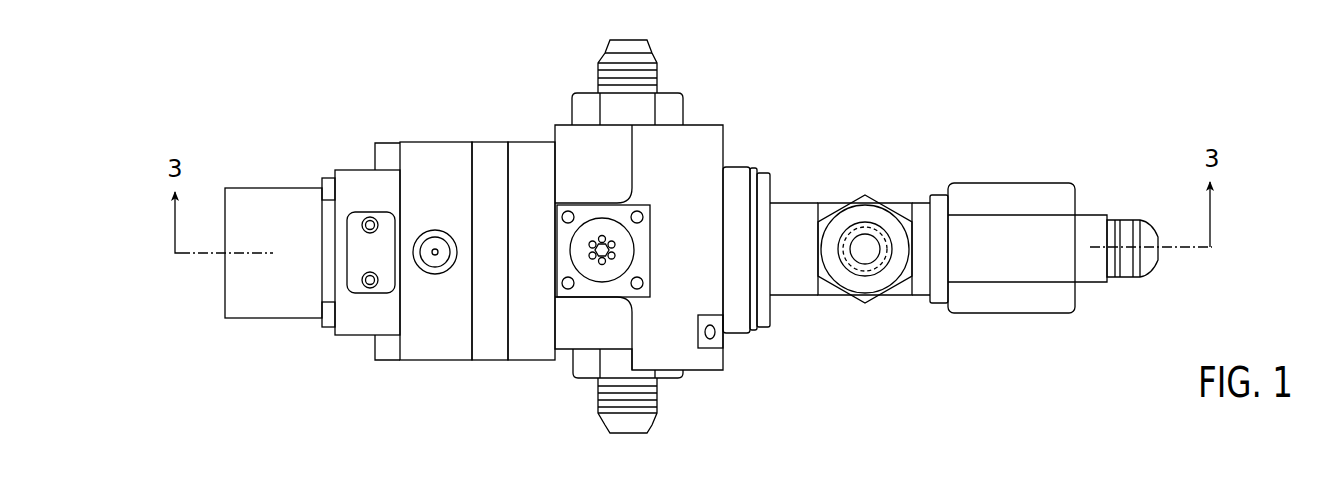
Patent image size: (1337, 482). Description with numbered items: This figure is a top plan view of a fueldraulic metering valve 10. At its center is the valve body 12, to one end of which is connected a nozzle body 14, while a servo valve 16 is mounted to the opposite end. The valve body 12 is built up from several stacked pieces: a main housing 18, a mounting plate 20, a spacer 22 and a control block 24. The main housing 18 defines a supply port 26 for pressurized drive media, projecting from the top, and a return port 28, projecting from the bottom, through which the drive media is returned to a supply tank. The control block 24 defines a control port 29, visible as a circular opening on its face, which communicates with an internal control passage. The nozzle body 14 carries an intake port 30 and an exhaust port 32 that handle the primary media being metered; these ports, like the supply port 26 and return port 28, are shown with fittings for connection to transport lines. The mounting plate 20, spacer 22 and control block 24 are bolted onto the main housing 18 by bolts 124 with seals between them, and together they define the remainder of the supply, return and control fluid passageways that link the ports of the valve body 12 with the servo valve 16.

The metering valve 10 is at (843, 97).
The valve body 12 is at (698, 117).
The nozzle body 14 is at (798, 196).
The servo valve 16 is at (278, 300).
The main housing 18 is at (703, 362).
The mounting plate 20 is at (540, 152).
The spacer 22 is at (492, 152).
The control block 24 is at (440, 152).
The supply port 26 is at (622, 31).
The return port 28 is at (623, 443).
The control port 29 is at (440, 262).
The intake port 30 is at (869, 244).
The exhaust port 32 is at (1156, 267).
The bolts 124 is at (378, 155).